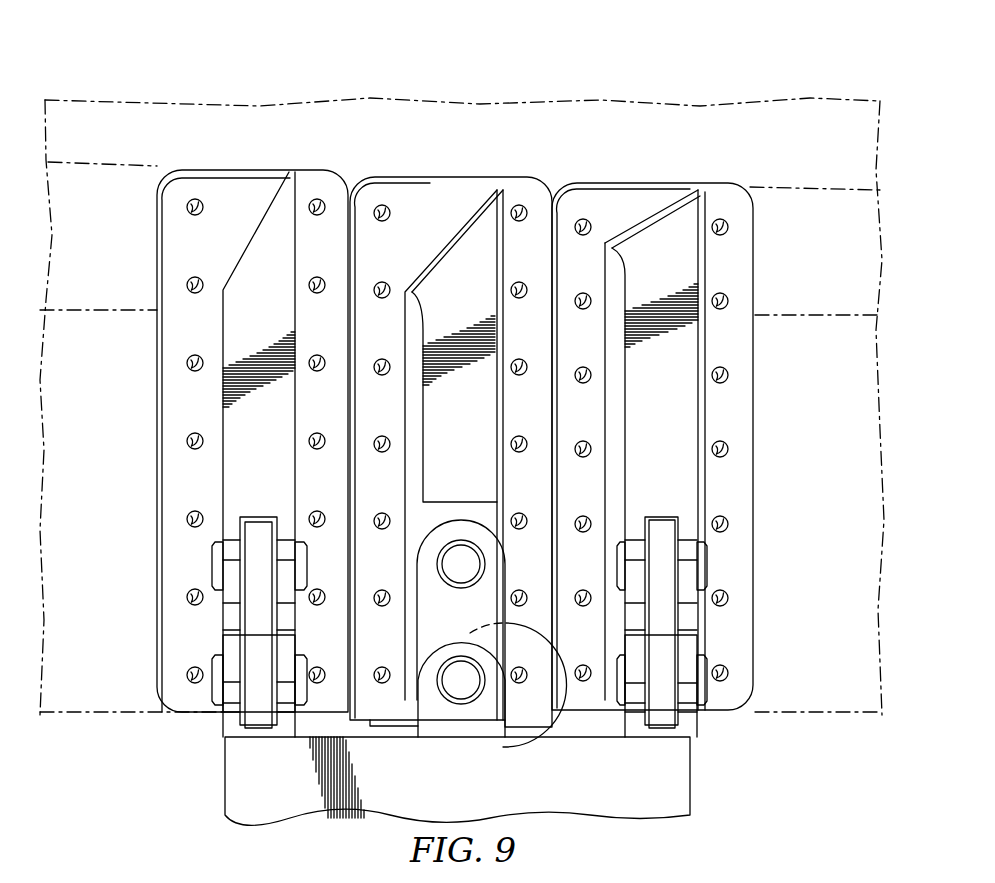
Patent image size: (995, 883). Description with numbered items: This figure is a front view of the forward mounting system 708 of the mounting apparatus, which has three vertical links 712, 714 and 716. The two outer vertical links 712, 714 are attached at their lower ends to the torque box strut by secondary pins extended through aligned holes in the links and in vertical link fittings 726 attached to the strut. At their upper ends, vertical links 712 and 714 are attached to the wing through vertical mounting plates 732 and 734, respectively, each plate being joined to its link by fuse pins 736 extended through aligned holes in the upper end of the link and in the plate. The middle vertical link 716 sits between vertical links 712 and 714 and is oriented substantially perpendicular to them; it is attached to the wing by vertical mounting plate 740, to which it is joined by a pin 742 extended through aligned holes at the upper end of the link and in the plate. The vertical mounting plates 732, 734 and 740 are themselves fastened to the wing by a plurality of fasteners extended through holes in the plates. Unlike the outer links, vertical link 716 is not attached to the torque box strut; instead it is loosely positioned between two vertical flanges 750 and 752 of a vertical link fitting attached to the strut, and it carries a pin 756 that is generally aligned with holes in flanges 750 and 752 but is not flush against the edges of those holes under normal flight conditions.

The forward mounting system 708 is at (313, 63).
The vertical mounting plate 734 is at (246, 170).
The vertical mounting plate 740 is at (432, 178).
The vertical mounting plate 732 is at (626, 186).
The vertical link 714 is at (260, 528).
The vertical link 712 is at (668, 530).
The fuse pins 736 is at (212, 566).
The vertical link fittings 726 is at (212, 648).
The vertical link 716 is at (430, 610).
The pin 742 is at (465, 545).
The vertical flange 750 is at (437, 735).
The pin 756 is at (487, 722).
The vertical flange 752 is at (565, 725).